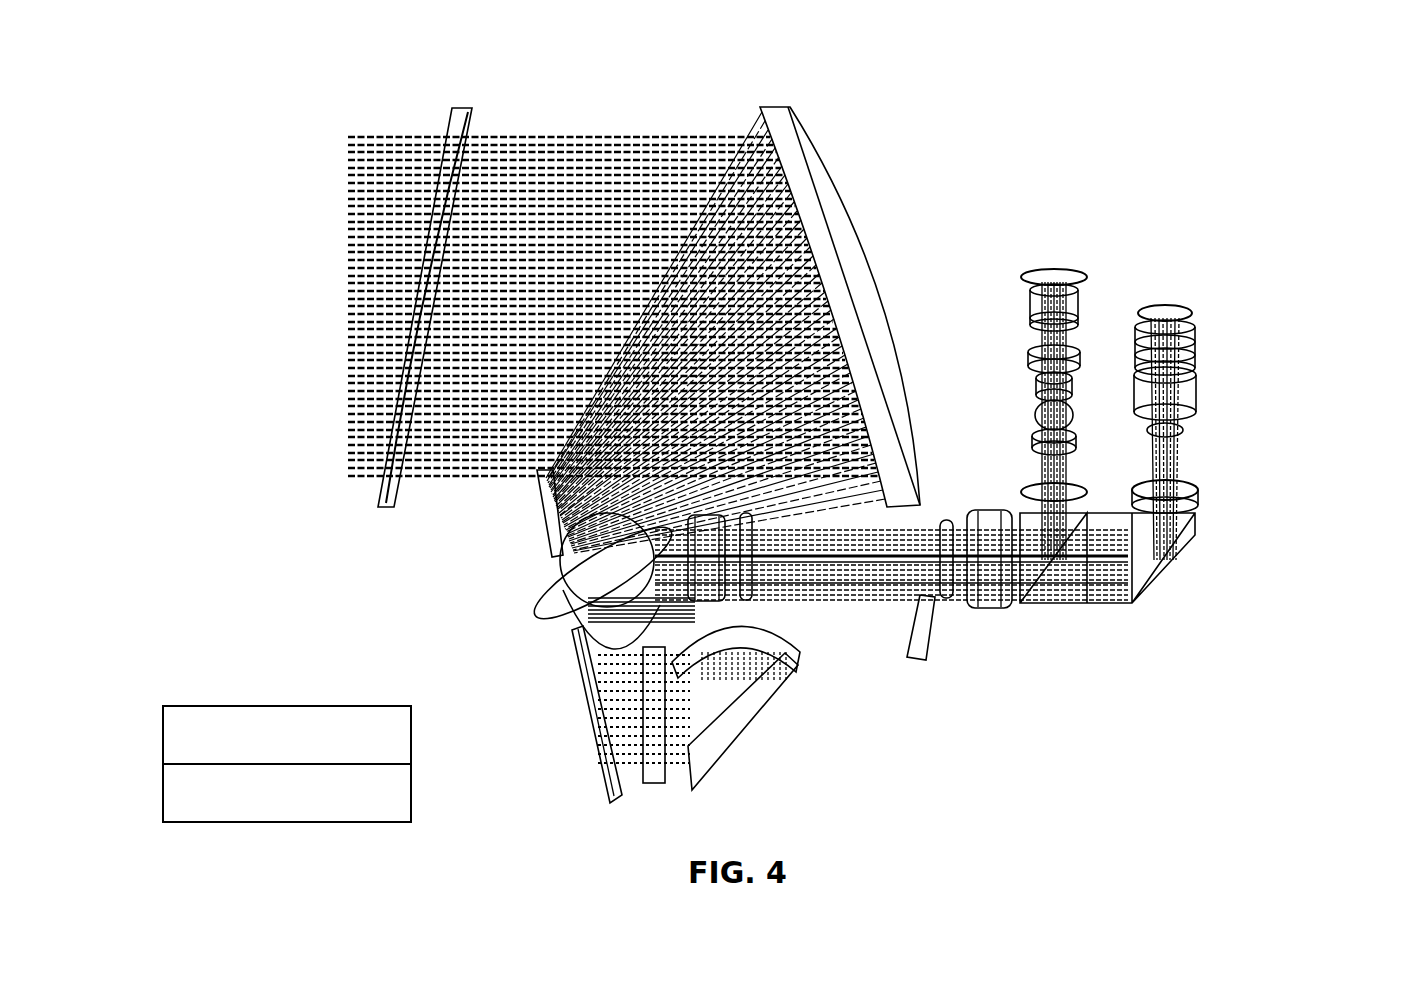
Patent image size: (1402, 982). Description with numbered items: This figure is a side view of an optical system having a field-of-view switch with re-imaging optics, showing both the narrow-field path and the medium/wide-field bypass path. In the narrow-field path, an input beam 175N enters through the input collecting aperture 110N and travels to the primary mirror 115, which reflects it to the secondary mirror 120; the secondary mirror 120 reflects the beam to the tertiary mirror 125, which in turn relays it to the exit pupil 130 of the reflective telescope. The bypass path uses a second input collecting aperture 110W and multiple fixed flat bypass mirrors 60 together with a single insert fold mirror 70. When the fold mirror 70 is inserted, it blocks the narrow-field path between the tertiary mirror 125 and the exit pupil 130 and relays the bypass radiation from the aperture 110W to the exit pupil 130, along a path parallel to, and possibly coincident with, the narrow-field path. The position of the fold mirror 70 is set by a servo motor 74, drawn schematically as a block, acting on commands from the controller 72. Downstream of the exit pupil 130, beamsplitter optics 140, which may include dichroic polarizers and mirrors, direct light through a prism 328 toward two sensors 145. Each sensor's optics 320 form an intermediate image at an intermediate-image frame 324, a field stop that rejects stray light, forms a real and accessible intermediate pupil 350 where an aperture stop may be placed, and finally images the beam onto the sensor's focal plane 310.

The input collecting aperture 110N is at (463, 106).
The input beam 175N is at (327, 135).
The primary mirror 115 is at (818, 163).
The secondary mirror 120 is at (540, 512).
The exit pupil 130 is at (585, 603).
The insert fold mirror 70 is at (743, 513).
The tertiary mirror 125 is at (935, 625).
The prism 328 is at (1150, 572).
The beamsplitter optics 140 is at (1182, 637).
The sensor optics 320 is at (1154, 391).
The image plane 310 is at (1022, 275).
The intermediate pupil 350 is at (1030, 356).
The intermediate-image frame 324 is at (1022, 492).
The sensor 145 is at (1077, 252).
The input collecting aperture 110W is at (588, 712).
The bypass mirror 60 is at (765, 747).
The servo motor 74 is at (163, 722).
The controller 72 is at (163, 782).